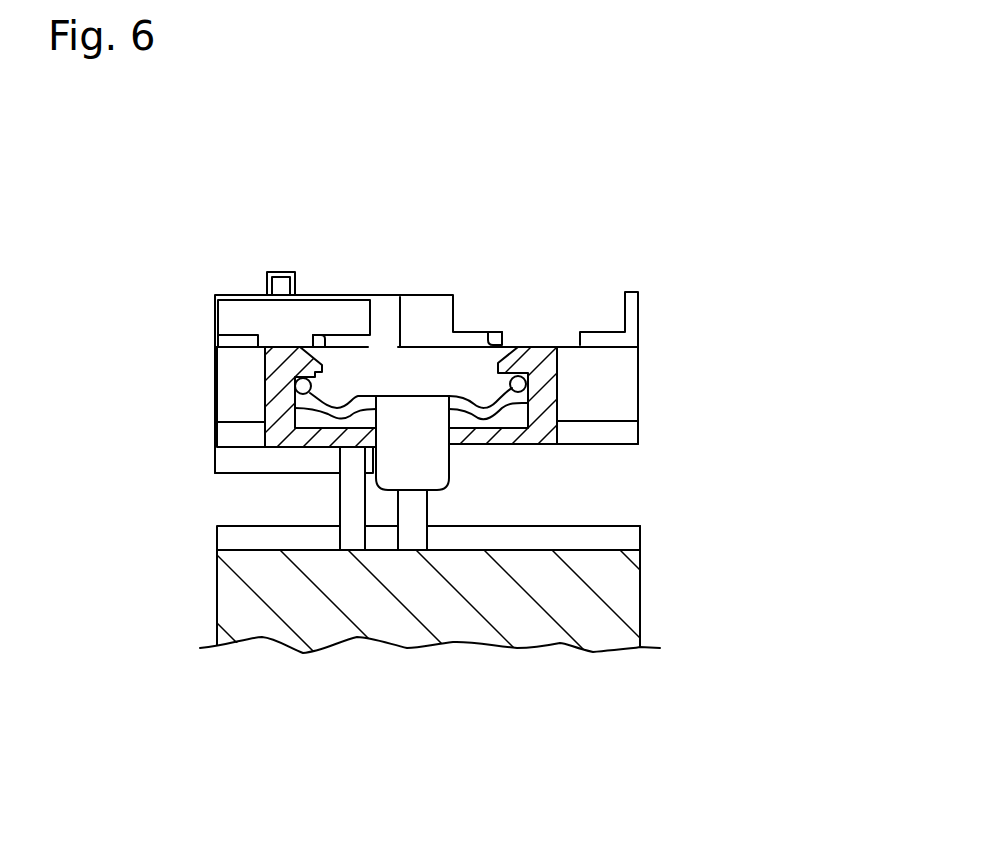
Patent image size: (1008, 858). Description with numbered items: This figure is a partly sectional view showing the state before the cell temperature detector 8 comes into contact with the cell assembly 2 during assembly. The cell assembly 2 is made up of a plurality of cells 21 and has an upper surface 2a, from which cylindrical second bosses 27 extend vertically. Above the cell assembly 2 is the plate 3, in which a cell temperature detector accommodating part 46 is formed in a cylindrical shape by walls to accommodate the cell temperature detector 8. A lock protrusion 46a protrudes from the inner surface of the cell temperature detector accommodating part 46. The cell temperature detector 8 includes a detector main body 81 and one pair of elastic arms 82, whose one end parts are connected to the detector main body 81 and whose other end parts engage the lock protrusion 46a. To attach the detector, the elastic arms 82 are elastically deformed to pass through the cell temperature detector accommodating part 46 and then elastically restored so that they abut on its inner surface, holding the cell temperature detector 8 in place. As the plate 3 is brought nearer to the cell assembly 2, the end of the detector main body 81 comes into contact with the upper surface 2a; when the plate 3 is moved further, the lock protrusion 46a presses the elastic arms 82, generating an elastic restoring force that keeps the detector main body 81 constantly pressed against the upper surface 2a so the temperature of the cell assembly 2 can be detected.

The plate 3 is at (438, 283).
The cell temperature detector accommodating part 46 is at (535, 346).
The lock protrusion 46a is at (318, 347).
The elastic arms 82 is at (296, 410).
The cell temperature detector 8 is at (458, 460).
The detector main body 81 is at (450, 480).
The second boss 27 is at (340, 497).
The upper surface 2a is at (590, 530).
The cell assembly 2 is at (643, 573).
The cell 21 is at (623, 608).